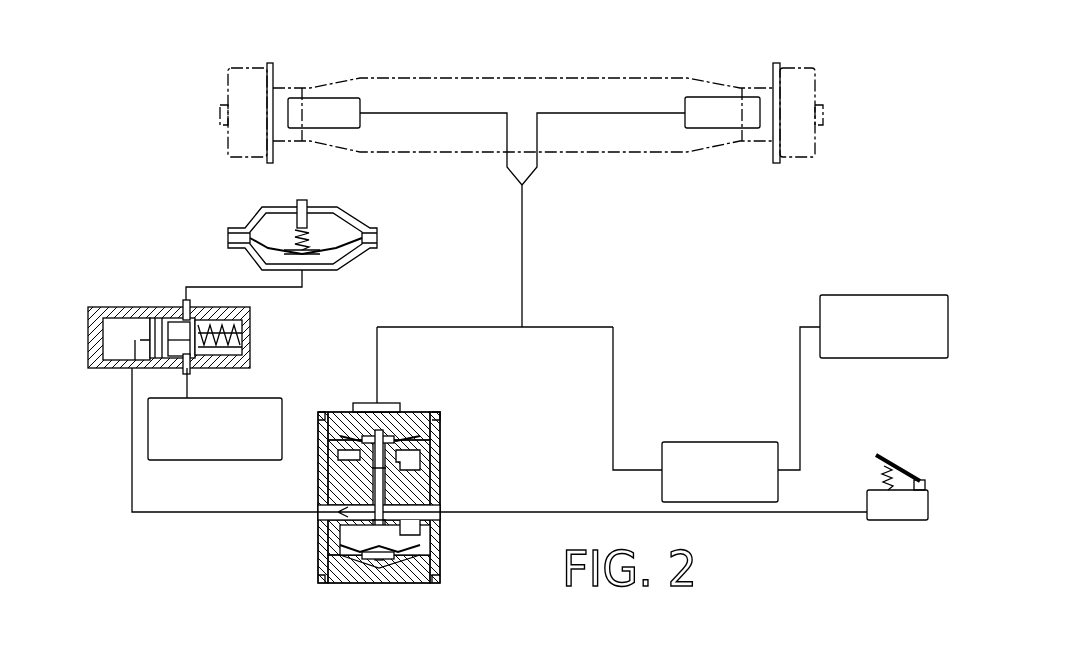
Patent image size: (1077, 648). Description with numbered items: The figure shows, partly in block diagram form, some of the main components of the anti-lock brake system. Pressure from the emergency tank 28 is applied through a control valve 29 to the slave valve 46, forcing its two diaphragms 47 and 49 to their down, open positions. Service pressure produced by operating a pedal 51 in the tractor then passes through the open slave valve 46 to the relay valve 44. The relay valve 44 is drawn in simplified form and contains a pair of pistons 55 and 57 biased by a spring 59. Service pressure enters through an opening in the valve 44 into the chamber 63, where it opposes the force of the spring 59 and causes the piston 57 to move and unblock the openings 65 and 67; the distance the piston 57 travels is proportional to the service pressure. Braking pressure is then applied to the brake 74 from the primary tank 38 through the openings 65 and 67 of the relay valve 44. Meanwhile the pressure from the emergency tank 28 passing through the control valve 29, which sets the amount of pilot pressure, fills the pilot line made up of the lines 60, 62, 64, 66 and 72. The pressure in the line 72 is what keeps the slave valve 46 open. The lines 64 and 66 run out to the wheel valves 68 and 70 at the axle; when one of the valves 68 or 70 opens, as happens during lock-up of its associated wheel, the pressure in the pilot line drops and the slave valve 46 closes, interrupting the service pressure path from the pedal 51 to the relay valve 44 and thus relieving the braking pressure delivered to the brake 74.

The emergency tank 28 is at (868, 358).
The control valve 29 is at (708, 442).
The primary tank 38 is at (250, 398).
The relay valve 44 is at (183, 330).
The slave valve 46 is at (440, 545).
The diaphragm 47 is at (403, 433).
The diaphragm 49 is at (404, 498).
The pedal 51 is at (885, 463).
The piston 55 is at (150, 307).
The piston 57 is at (193, 366).
The spring 59 is at (250, 318).
The line 60 is at (613, 407).
The line 62 is at (522, 240).
The chamber 63 is at (118, 345).
The line 64 is at (613, 113).
The opening 65 is at (182, 366).
The line 66 is at (427, 113).
The opening 67 is at (184, 306).
The valve 68 is at (718, 103).
The valve 70 is at (318, 108).
The line 72 is at (378, 377).
The brake 74 is at (352, 213).